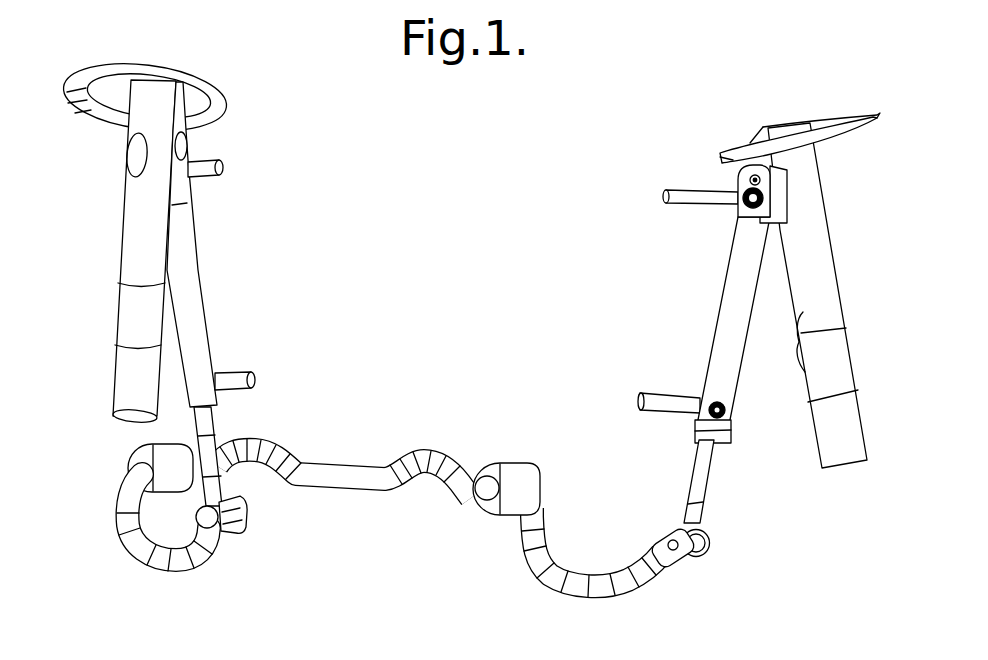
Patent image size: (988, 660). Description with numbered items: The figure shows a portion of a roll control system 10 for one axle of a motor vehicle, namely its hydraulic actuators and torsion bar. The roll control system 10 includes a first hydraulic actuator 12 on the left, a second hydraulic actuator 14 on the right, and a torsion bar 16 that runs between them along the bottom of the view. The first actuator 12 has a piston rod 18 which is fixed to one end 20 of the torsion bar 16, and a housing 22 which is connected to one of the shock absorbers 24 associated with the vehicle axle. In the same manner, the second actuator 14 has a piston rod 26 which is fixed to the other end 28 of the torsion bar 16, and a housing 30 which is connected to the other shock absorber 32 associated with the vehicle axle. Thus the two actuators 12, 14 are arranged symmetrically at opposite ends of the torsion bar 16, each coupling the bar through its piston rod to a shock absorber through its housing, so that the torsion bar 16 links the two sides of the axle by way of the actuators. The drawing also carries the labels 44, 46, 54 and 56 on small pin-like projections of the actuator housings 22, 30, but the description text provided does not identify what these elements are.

The roll control system 10 is at (441, 382).
The first hydraulic actuator 12 is at (222, 312).
The second hydraulic actuator 14 is at (706, 333).
The torsion bar 16 is at (372, 480).
The piston rod 18 is at (207, 438).
The one end of the torsion bar 20 is at (233, 527).
The housing 22 is at (197, 242).
The shock absorber 24 is at (133, 243).
The piston rod 26 is at (705, 478).
The other end of the torsion bar 28 is at (688, 565).
The housing 30 is at (732, 368).
The shock absorber 32 is at (820, 275).
The pin 44 is at (223, 174).
The pin 46 is at (228, 377).
The pin 54 is at (691, 190).
The pin 56 is at (662, 405).